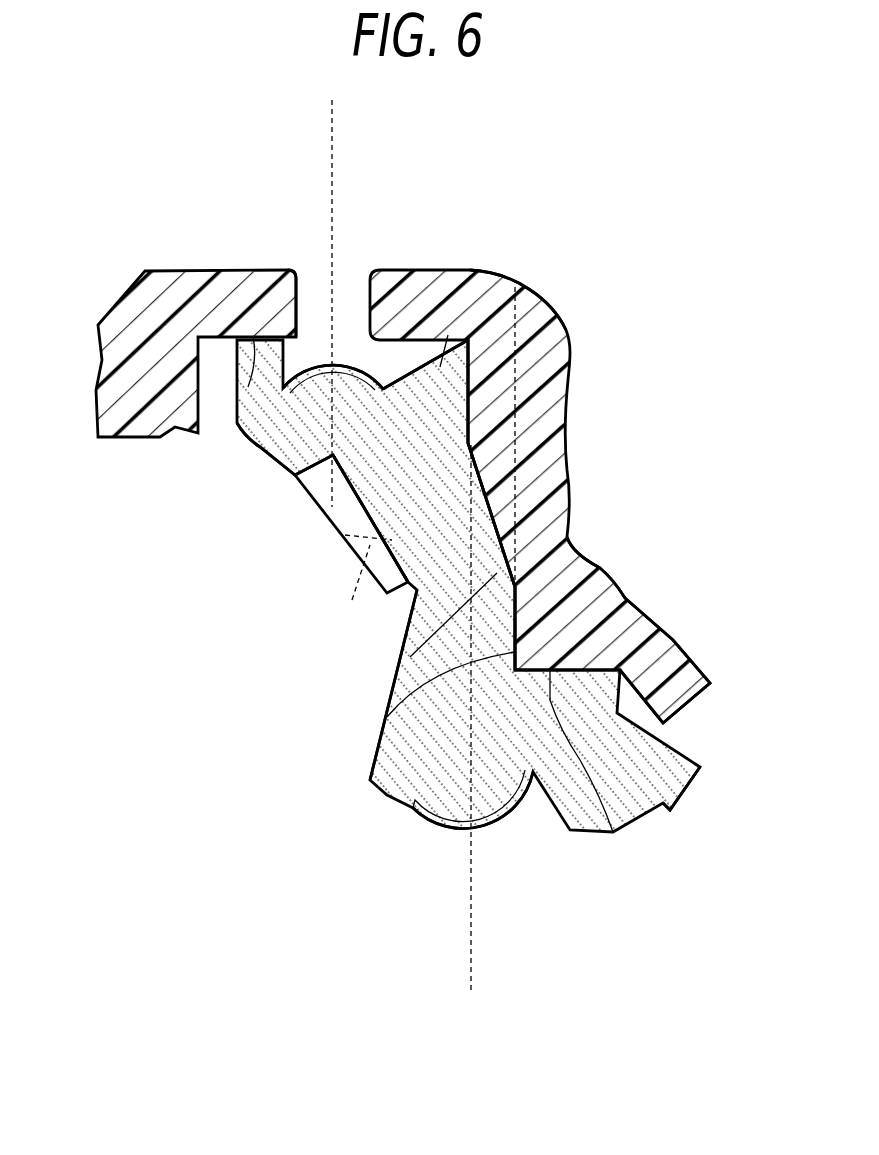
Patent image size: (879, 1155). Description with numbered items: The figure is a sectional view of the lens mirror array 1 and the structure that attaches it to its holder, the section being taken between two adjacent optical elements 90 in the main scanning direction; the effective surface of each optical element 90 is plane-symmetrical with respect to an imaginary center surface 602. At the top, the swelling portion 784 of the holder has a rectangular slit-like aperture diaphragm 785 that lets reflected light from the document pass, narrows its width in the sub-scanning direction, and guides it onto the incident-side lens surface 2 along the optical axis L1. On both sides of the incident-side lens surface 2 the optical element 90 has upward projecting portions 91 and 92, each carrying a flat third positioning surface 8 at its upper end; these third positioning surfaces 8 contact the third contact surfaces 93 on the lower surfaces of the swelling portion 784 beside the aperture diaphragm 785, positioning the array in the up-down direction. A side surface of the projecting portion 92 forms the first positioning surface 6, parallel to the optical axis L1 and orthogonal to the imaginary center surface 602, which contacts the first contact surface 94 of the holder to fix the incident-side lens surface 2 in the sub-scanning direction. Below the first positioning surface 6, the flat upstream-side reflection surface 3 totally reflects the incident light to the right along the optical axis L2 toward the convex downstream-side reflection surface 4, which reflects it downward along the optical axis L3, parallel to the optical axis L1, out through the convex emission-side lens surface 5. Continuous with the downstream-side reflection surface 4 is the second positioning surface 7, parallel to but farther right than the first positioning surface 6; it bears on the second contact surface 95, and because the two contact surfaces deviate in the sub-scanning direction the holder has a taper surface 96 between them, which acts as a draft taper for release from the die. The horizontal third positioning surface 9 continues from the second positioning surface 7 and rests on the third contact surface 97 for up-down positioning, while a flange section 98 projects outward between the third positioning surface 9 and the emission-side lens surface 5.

The lens mirror array 1 is at (370, 778).
The incident-side lens surface 2 is at (350, 366).
The upstream-side reflection surface 3 is at (360, 548).
The downstream-side reflection surface 4 is at (440, 540).
The emission-side lens surface 5 is at (510, 818).
The first positioning surface 6 is at (568, 318).
The second positioning surface 7 is at (613, 582).
The third positioning surface 8 is at (253, 337).
The third positioning surface 9 is at (673, 640).
The optical element 90 is at (393, 805).
The projecting portion 91 is at (235, 370).
The projecting portion 92 is at (505, 271).
The third contact surface 93 is at (235, 423).
The first contact surface 94 is at (453, 393).
The second contact surface 95 is at (387, 717).
The taper surface 96 is at (410, 667).
The third contact surface 97 is at (613, 833).
The flange section 98 is at (683, 777).
The imaginary center surface 602 is at (260, 447).
The swelling portion 784 is at (125, 296).
The aperture diaphragm 785 is at (308, 280).
The optical axis of incident light L1 is at (339, 123).
The optical axis of reflected light L2 is at (366, 587).
The optical axis of emission light L3 is at (468, 957).